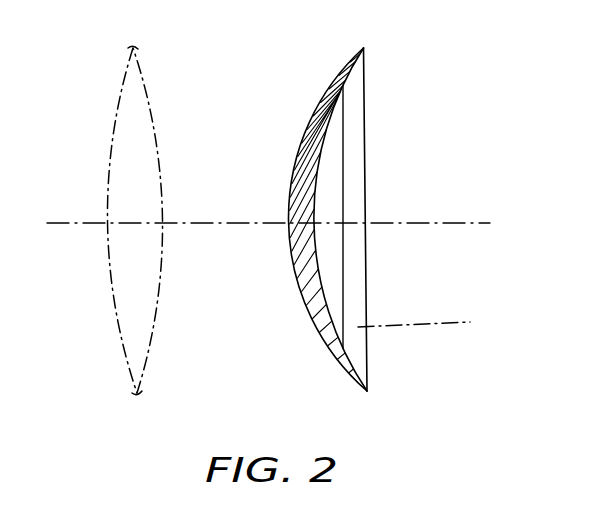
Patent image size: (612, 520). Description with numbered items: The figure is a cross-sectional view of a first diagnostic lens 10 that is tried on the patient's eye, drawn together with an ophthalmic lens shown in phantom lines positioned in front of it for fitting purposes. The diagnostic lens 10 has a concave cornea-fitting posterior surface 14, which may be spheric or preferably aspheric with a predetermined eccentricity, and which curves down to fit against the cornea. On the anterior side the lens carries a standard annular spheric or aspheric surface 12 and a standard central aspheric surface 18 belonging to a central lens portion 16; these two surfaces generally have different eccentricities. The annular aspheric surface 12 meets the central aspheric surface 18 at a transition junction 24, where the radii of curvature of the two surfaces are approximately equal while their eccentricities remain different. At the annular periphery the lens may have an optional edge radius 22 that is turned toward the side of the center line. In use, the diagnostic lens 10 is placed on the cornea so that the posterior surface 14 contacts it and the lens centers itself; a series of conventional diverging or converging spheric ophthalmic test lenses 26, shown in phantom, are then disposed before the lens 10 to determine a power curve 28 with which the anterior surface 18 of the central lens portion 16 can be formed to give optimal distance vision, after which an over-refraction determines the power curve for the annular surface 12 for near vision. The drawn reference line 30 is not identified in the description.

The diagnostic lens 10 is at (292, 320).
The annular spheric or aspheric surface 12 is at (322, 90).
The concave cornea-fitting posterior surface 14 is at (353, 72).
The central lens portion 16 is at (303, 195).
The central aspheric surface 18 is at (289, 201).
The edge radius 22 is at (368, 391).
The transition junction 24 is at (305, 135).
The spheric ophthalmic test lenses 26 is at (163, 253).
The power curve 28 is at (429, 322).
The reference line 30 is at (324, 289).